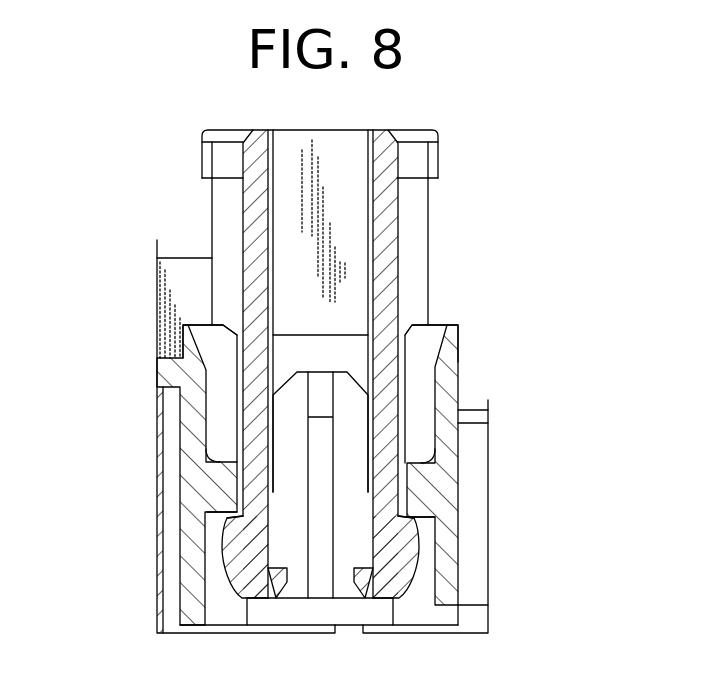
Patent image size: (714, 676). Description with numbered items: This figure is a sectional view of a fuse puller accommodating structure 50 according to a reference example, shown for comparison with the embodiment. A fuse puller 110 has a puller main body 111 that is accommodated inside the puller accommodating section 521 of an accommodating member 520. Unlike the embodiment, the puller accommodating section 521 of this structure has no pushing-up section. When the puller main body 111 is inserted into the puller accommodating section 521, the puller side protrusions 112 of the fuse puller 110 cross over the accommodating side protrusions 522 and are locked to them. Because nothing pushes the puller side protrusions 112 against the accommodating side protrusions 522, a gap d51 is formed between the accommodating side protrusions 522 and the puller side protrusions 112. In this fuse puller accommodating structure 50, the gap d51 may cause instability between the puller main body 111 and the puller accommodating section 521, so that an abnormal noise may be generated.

The fuse puller accommodating structure 50 is at (337, 110).
The fuse puller 110 is at (428, 124).
The puller main body 111 is at (438, 160).
The puller side protrusions 112 is at (225, 530).
The accommodating member 520 is at (450, 311).
The puller accommodating section 521 is at (462, 362).
The accommodating side protrusions 522 is at (210, 447).
The gap d51 is at (214, 525).